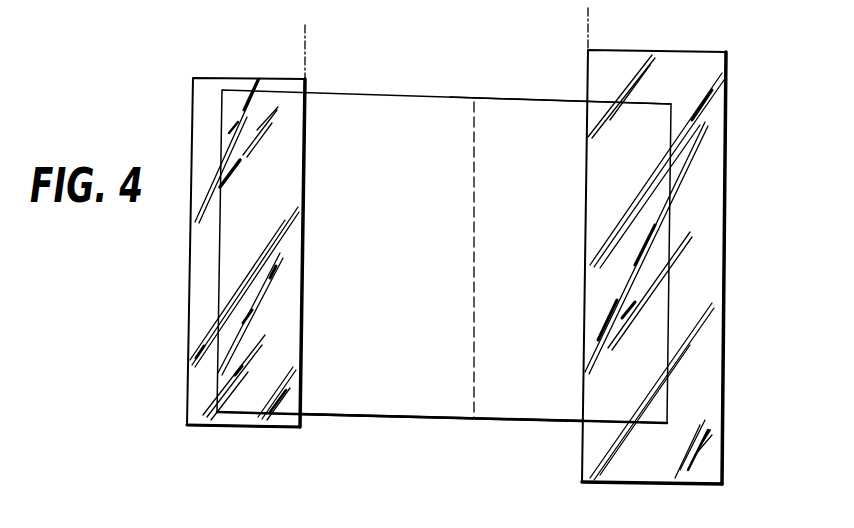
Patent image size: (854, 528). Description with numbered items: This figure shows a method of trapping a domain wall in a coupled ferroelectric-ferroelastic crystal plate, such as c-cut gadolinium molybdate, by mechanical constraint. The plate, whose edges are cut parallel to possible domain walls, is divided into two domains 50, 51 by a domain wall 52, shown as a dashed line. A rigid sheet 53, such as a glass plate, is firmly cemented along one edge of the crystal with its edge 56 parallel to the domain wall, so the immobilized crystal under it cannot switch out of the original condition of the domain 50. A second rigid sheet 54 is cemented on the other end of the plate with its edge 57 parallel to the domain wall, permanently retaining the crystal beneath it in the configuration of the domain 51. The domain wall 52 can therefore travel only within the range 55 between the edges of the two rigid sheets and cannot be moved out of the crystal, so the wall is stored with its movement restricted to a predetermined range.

The domain 50 is at (365, 110).
The domain 51 is at (538, 110).
The domain wall 52 is at (474, 120).
The rigid sheet 53 is at (197, 80).
The second rigid sheet 54 is at (716, 58).
The range 55 is at (582, 420).
The edge of the rigid sheet 56 is at (312, 37).
The edge of the second rigid sheet 57 is at (581, 17).